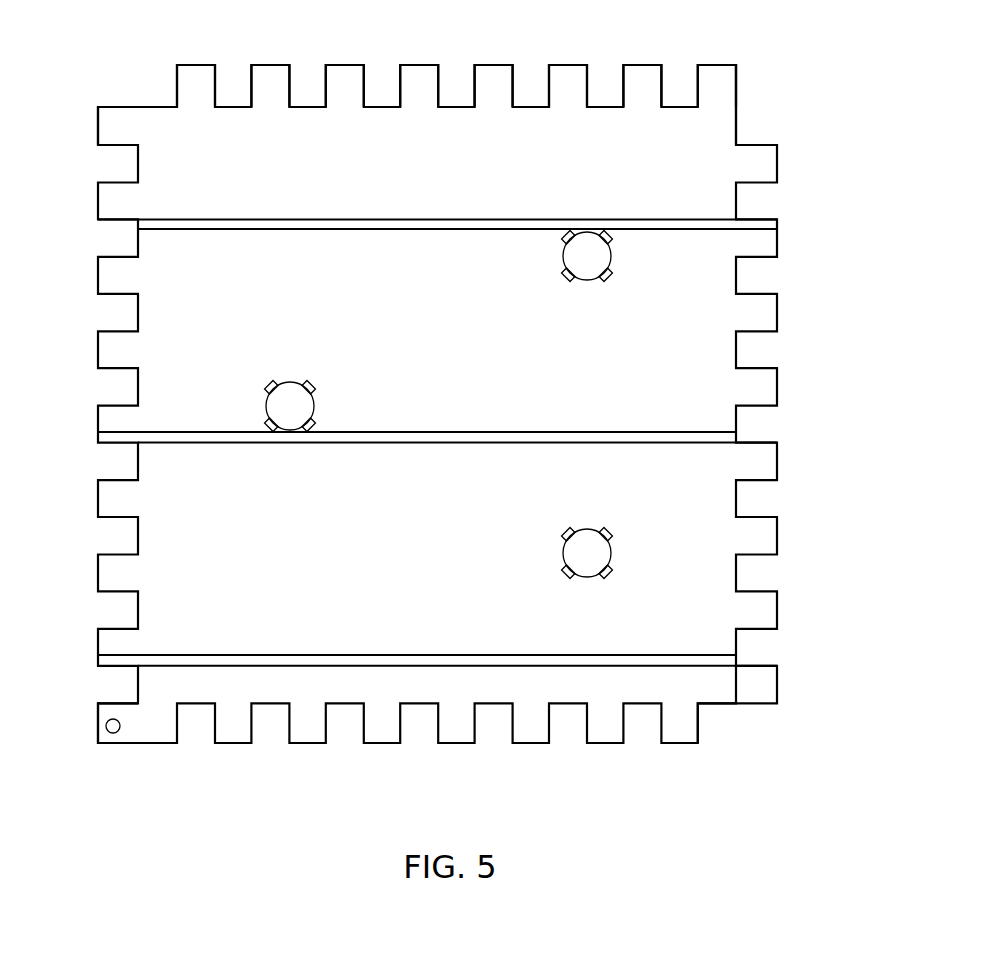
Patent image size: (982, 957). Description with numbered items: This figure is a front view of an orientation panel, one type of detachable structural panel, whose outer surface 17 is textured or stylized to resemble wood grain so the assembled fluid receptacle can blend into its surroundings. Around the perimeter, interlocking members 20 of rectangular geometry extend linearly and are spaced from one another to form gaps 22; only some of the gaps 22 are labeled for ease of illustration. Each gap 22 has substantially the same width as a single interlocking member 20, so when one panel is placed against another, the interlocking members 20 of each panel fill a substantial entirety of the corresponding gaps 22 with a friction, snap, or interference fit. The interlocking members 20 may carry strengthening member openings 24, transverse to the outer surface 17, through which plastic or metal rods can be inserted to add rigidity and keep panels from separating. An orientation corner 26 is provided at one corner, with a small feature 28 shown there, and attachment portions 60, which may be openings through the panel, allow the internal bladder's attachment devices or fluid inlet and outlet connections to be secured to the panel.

The outer surface 17 is at (107, 201).
The interlocking members 20 is at (195, 65).
The gaps 22 is at (239, 107).
The strengthening member openings 24 is at (118, 96).
The orientation corner 26 is at (88, 720).
The hole 28 is at (113, 733).
The attachment portions 60 is at (587, 280).